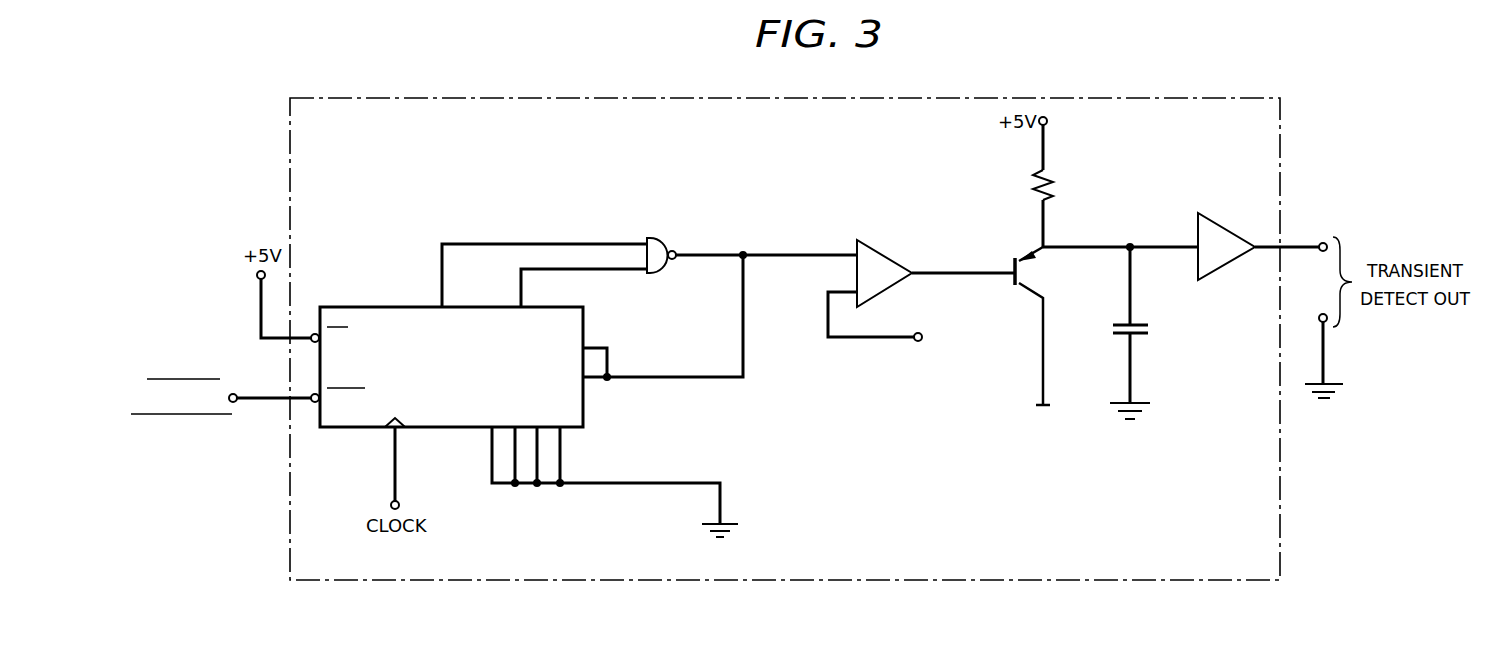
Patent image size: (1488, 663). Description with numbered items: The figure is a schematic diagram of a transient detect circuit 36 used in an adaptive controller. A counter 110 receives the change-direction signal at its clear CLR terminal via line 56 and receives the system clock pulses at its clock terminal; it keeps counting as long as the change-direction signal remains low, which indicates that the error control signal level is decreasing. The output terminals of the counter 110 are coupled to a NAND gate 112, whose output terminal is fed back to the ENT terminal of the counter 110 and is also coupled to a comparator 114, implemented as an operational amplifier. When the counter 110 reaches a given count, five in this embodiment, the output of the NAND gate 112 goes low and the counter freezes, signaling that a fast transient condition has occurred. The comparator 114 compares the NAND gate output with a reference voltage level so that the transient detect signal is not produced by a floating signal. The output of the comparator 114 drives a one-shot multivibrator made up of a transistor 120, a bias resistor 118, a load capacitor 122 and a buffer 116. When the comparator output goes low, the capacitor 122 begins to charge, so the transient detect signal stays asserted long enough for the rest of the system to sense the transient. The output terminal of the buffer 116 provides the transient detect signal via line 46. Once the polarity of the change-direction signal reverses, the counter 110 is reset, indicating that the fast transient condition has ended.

The transient detect circuit 36 is at (945, 580).
The line 46 is at (1297, 245).
The line 56 is at (233, 394).
The counter 110 is at (360, 307).
The NAND gate 112 is at (655, 238).
The comparator 114 is at (893, 258).
The buffer 116 is at (1240, 235).
The bias resistor 118 is at (1057, 175).
The transistor 120 is at (1030, 282).
The load capacitor 122 is at (1140, 336).